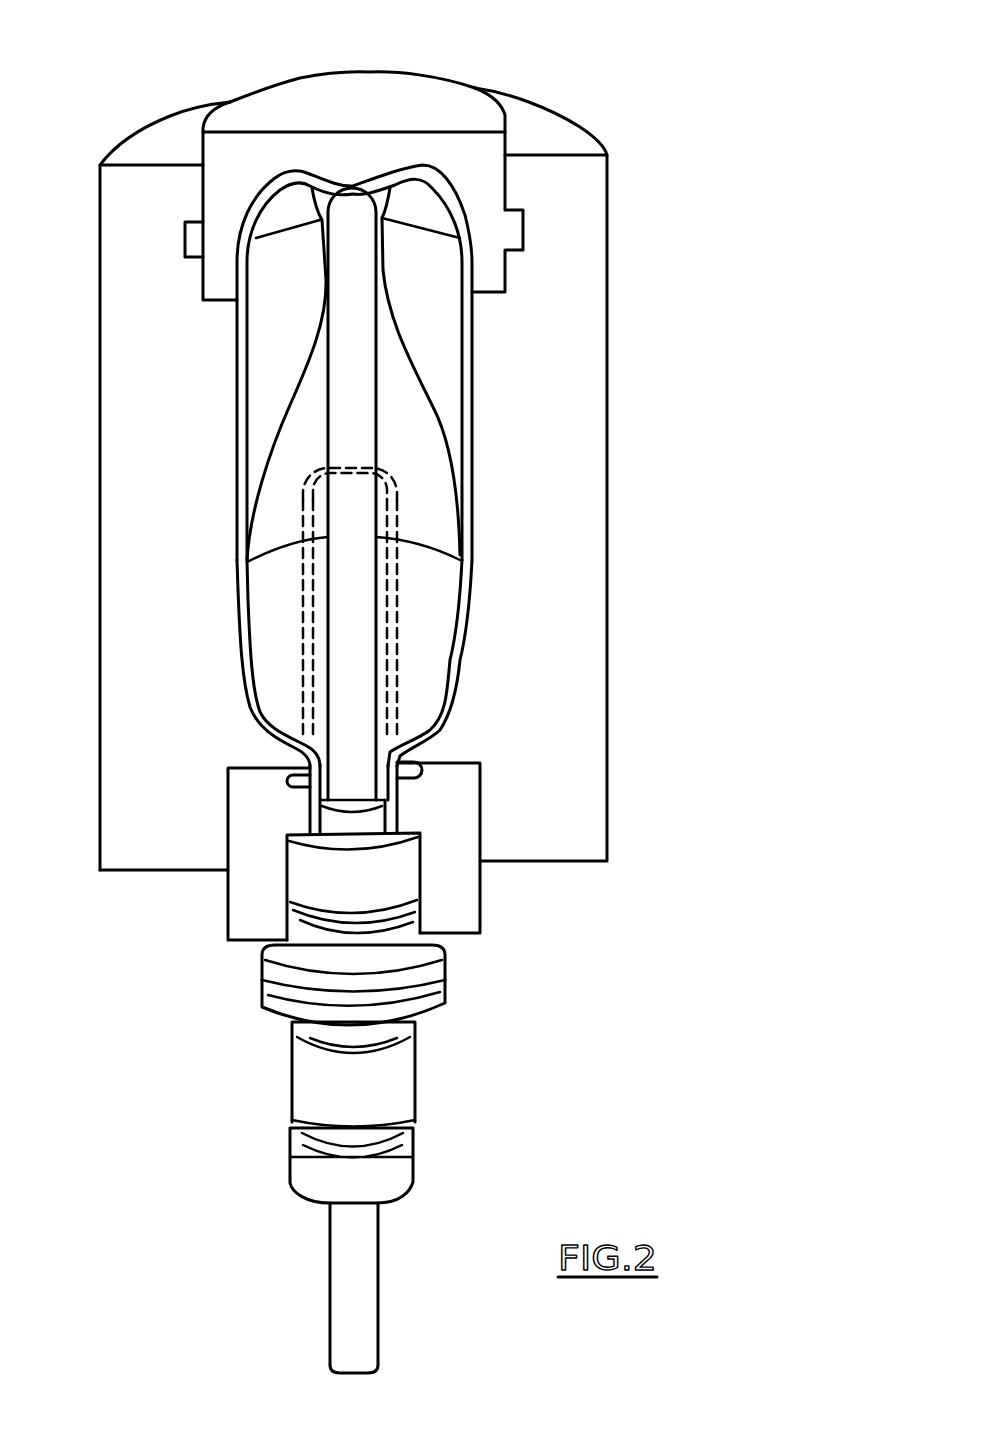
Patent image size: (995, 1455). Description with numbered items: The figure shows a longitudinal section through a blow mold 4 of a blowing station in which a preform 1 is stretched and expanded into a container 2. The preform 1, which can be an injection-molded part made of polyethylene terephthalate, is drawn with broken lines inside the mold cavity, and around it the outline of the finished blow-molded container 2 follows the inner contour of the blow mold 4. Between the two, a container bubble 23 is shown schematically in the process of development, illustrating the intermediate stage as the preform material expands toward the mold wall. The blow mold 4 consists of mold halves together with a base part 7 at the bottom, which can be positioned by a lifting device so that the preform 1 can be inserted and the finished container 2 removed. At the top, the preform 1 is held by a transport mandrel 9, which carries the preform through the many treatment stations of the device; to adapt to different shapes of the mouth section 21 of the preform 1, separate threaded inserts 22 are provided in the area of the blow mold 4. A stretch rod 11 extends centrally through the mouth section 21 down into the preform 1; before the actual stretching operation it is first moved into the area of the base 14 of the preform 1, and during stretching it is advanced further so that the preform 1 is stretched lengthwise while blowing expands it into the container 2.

The preform 1 is at (393, 640).
The container 2 is at (470, 400).
The blow mold 4 is at (565, 475).
The base part 7 is at (442, 90).
The transport mandrel 9 is at (432, 1008).
The stretch rod 11 is at (330, 1301).
The base 14 is at (388, 470).
The mouth section 21 is at (398, 794).
The threaded inserts 22 is at (463, 892).
The container bubble 23 is at (408, 358).